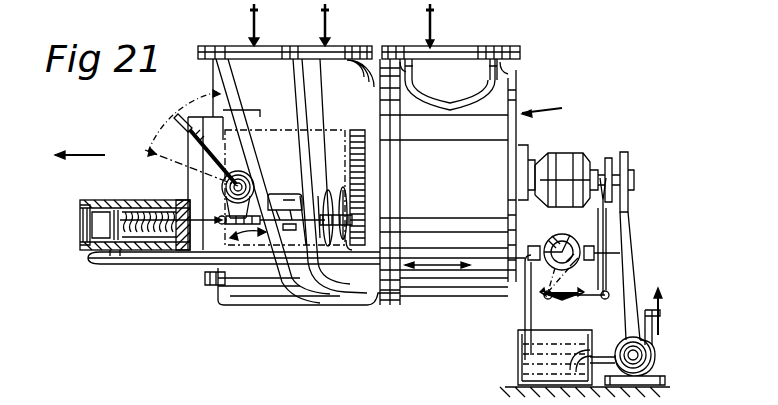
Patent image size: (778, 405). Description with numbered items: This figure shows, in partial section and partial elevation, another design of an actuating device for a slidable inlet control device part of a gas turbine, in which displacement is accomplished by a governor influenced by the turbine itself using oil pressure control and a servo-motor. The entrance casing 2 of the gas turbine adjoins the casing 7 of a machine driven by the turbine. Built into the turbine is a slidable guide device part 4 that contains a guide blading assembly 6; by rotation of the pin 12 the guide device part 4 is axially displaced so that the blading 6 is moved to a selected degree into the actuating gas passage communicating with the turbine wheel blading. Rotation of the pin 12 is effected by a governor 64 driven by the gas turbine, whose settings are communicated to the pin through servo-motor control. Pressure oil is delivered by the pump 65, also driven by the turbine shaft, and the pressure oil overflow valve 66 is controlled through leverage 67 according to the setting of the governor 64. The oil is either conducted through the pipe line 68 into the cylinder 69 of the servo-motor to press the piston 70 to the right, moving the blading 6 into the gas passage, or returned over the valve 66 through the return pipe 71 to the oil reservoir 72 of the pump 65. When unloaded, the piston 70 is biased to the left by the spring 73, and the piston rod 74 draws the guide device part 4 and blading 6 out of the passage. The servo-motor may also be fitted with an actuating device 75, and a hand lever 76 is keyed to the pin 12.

The entrance casing 2 is at (218, 290).
The slidable guide device part 4 is at (285, 131).
The guide blading assembly 6 is at (352, 130).
The casing of a machine 7 is at (414, 305).
The pin 12 is at (252, 186).
The governor 64 is at (592, 158).
The pump 65 is at (615, 343).
The pressure oil overflow valve 66 is at (568, 240).
The leverage 67 is at (600, 281).
The pipe line 68 is at (150, 268).
The cylinder 69 is at (84, 205).
The piston 70 is at (100, 210).
The return pipe 71 is at (525, 324).
The oil reservoir 72 is at (520, 370).
The spring 73 is at (136, 212).
The piston rod 74 is at (180, 200).
The actuating device 75 is at (326, 207).
The hand lever 76 is at (165, 142).